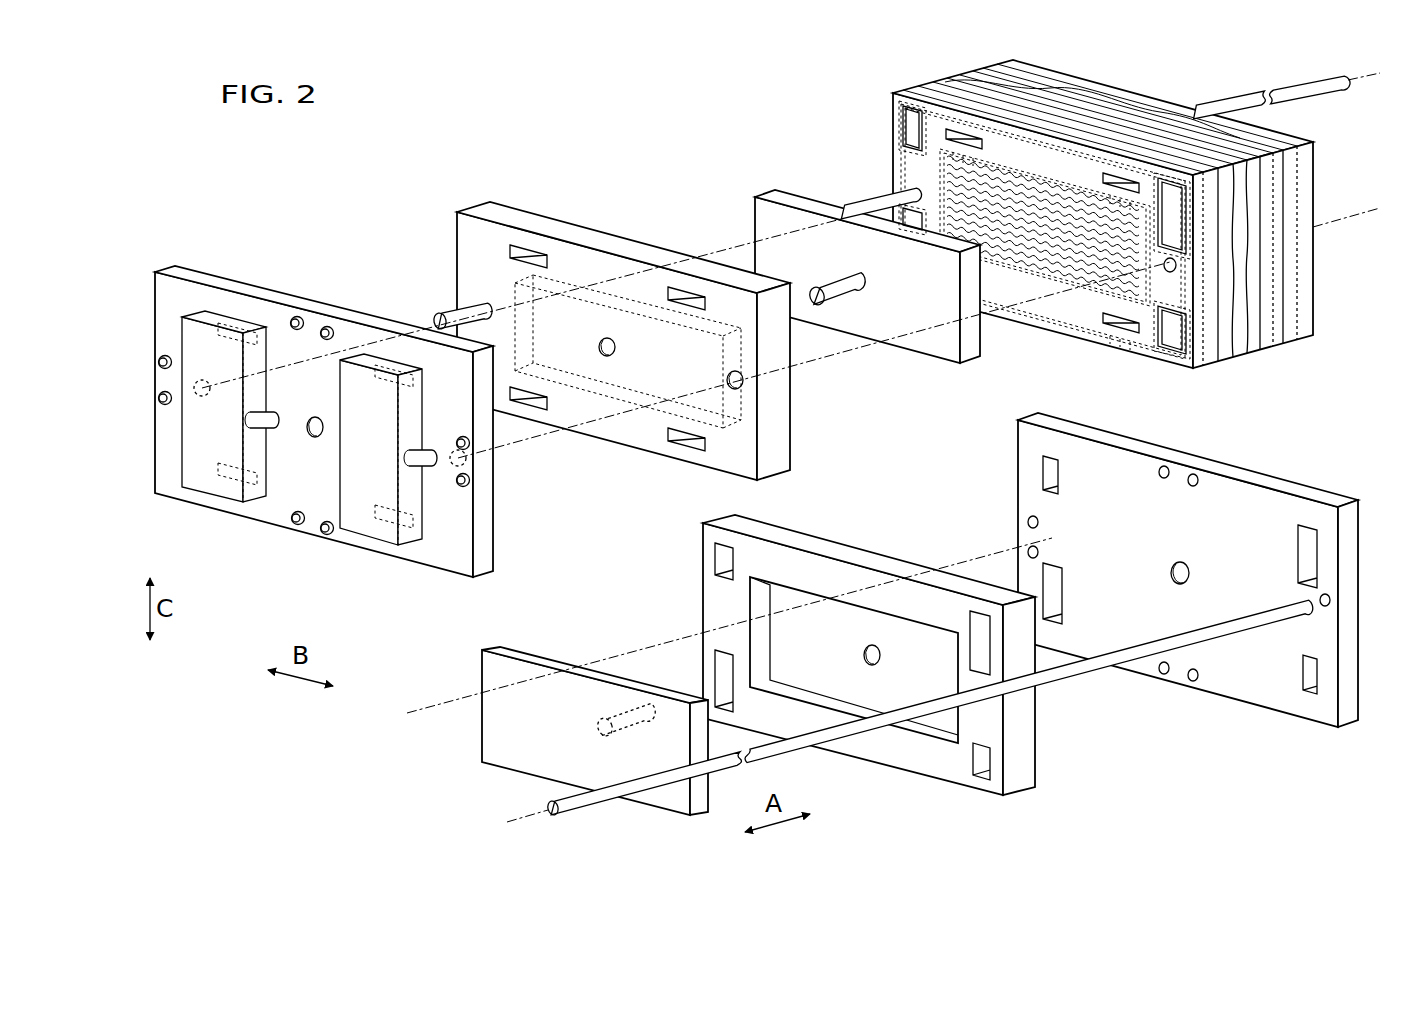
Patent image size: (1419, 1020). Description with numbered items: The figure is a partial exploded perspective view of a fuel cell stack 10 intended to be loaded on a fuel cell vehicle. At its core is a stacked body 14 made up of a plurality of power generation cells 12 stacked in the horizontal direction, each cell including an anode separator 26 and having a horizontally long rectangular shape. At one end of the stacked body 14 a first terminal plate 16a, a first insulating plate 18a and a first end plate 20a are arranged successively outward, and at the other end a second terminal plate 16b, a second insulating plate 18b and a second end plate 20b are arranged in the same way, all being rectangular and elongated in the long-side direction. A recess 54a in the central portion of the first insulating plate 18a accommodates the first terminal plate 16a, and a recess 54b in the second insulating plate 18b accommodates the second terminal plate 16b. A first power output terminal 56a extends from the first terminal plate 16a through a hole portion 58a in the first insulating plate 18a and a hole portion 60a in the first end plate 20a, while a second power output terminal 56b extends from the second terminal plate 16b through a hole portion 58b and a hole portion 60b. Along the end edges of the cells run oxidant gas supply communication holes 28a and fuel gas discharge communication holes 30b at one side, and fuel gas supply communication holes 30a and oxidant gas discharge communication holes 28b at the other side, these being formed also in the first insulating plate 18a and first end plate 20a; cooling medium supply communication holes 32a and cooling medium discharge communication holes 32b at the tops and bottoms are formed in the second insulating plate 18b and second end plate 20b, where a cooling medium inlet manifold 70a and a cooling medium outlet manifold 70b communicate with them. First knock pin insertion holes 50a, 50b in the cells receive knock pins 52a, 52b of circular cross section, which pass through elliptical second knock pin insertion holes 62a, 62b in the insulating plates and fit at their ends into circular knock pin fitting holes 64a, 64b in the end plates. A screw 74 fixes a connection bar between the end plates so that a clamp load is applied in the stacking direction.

The fuel cell stack 10 is at (611, 130).
The power generation cell 12 is at (1262, 352).
The stacked body 14 is at (1250, 403).
The first terminal plate 16a is at (479, 652).
The second terminal plate 16b is at (757, 194).
The first insulating plate 18a is at (700, 525).
The second insulating plate 18b is at (458, 209).
The first end plate 20a is at (1015, 429).
The second end plate 20b is at (165, 265).
The anode separator 26 is at (1047, 318).
The oxidant gas supply communication hole 28a is at (1168, 190).
The oxidant gas discharge communication hole 28b is at (915, 229).
The fuel gas supply communication hole 30a is at (900, 132).
The fuel gas discharge communication hole 30b is at (1173, 345).
The cooling medium supply communication hole 32a is at (693, 304).
The cooling medium discharge communication hole 32b is at (227, 314).
The first knock pin insertion hole 50a is at (1180, 272).
The first knock pin insertion hole 50b is at (908, 190).
The knock pin 52a is at (582, 806).
The knock pin 52b is at (436, 320).
The recess 54a is at (917, 725).
The recess 54b is at (650, 410).
The first power output terminal 56a is at (632, 708).
The second power output terminal 56b is at (840, 299).
The hole portion 58a is at (863, 660).
The hole portion 58b is at (618, 346).
The hole portion 60a is at (1184, 574).
The hole portion 60b is at (313, 438).
The second knock pin insertion hole 62a is at (745, 383).
The second knock pin insertion hole 62b is at (460, 314).
The knock pin fitting hole 64a is at (470, 460).
The knock pin fitting hole 64b is at (207, 396).
The cooling medium inlet manifold 70a is at (366, 530).
The cooling medium outlet manifold 70b is at (205, 488).
The screw 74 is at (298, 316).